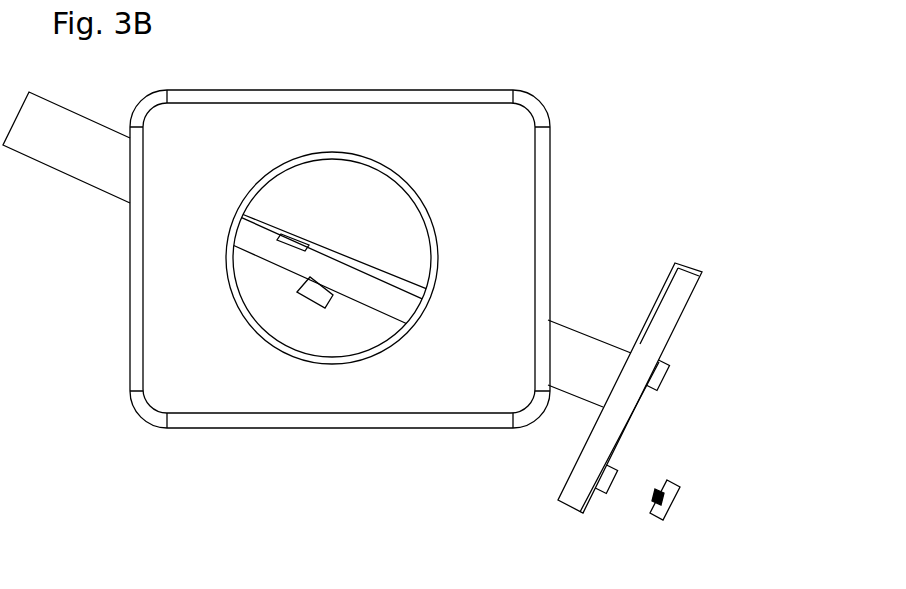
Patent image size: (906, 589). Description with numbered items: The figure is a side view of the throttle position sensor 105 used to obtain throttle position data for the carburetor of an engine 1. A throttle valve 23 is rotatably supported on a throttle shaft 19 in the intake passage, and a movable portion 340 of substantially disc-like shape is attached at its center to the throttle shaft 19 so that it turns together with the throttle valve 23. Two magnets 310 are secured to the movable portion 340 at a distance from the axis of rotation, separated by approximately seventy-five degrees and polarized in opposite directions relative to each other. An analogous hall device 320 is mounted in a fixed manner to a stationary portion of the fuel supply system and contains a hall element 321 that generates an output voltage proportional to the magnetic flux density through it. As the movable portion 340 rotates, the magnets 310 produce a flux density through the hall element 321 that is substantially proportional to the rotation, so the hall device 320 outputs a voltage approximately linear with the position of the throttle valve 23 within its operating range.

The engine 1 is at (100, 411).
The throttle shaft 19 is at (570, 338).
The throttle valve 23 is at (323, 240).
The throttle position sensor 105 is at (695, 0).
The magnet 310 is at (668, 375).
The analogous hall device 320 is at (688, 497).
The hall element 321 is at (655, 495).
The movable portion 340 is at (700, 272).